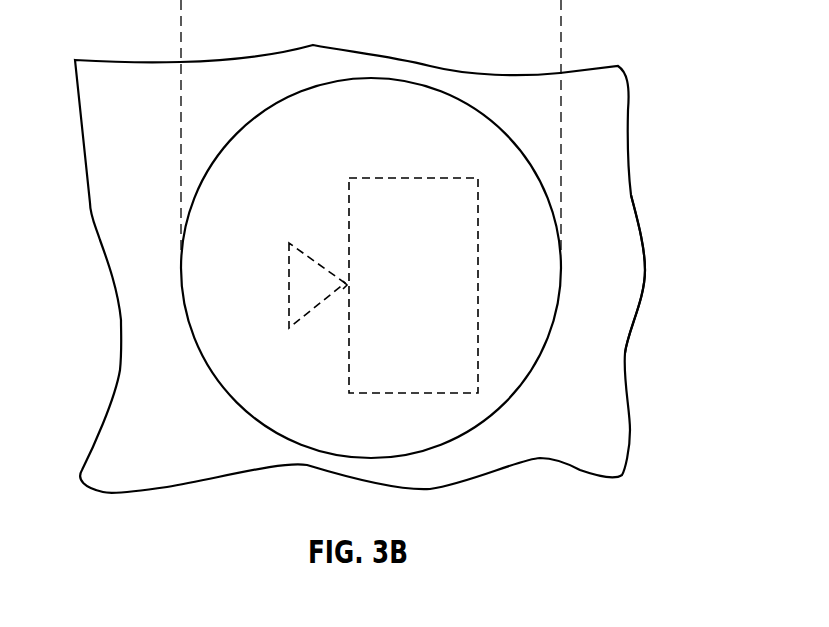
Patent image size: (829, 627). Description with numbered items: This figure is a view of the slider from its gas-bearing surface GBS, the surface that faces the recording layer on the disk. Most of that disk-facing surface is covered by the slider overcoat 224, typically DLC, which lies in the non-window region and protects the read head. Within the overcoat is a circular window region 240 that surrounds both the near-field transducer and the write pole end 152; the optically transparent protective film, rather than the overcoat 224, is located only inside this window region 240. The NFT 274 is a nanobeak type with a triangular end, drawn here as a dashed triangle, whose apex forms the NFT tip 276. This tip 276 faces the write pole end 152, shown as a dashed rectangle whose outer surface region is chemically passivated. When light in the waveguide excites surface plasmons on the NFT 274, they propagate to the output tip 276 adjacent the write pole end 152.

The slider overcoat 224 is at (610, 118).
The gas-bearing surface GBS is at (618, 198).
The window region 240 is at (483, 112).
The write pole end 152 is at (428, 180).
The NFT 274 is at (295, 277).
The NFT tip 276 is at (347, 285).